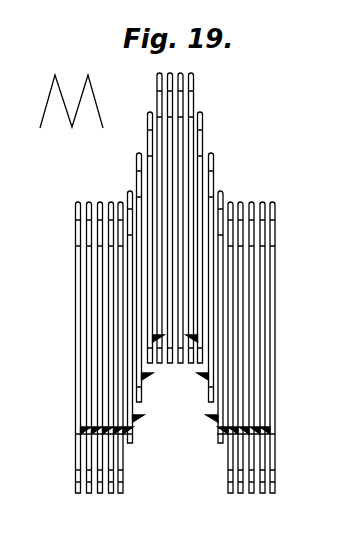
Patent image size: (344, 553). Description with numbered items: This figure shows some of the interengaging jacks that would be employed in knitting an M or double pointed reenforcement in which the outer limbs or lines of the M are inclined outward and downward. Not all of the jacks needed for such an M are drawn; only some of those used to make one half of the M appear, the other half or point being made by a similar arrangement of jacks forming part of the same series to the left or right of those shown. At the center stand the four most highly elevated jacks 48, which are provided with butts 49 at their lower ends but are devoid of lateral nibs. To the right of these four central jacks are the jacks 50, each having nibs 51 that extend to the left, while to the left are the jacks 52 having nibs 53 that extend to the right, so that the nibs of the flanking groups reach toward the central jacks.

The central jacks 48 is at (193, 70).
The butts 49 is at (185, 350).
The jacks 50 is at (278, 497).
The nibs 51 is at (273, 434).
The jacks 52 is at (140, 480).
The nibs 53 is at (80, 432).